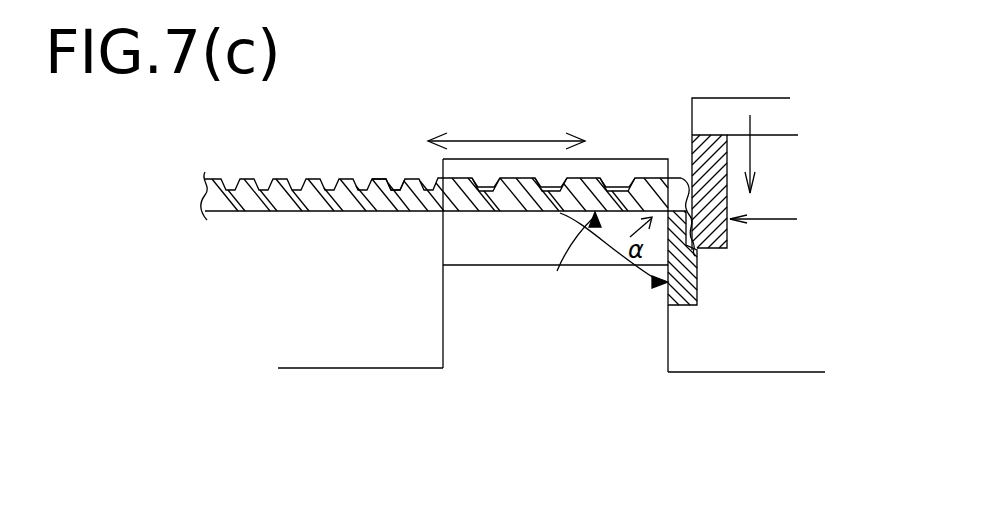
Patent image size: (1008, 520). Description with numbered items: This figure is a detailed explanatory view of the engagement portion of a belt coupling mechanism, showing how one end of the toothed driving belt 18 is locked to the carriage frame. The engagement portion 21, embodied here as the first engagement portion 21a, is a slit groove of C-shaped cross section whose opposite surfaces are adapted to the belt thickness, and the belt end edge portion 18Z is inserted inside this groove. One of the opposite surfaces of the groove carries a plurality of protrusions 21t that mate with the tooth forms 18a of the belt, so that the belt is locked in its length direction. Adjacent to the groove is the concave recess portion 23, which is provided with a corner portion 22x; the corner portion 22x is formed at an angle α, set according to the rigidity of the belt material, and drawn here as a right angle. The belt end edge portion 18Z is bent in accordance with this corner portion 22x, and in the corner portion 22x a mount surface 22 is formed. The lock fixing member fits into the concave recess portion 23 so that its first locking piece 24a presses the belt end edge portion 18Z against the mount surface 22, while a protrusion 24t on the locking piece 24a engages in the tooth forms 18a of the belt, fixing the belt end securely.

The driving belt 18 is at (262, 200).
The tooth forms 18a is at (375, 180).
The belt end edge portion 18Z is at (697, 285).
The engagement portion 21 is at (372, 263).
The first engagement portion 21a is at (467, 295).
The protrusions 21t is at (617, 190).
The mount surface 22 is at (667, 300).
The corner portion 22x is at (599, 261).
The concave recess portion 23 is at (745, 355).
The first locking piece 24a is at (705, 152).
The protrusion 24t is at (697, 247).